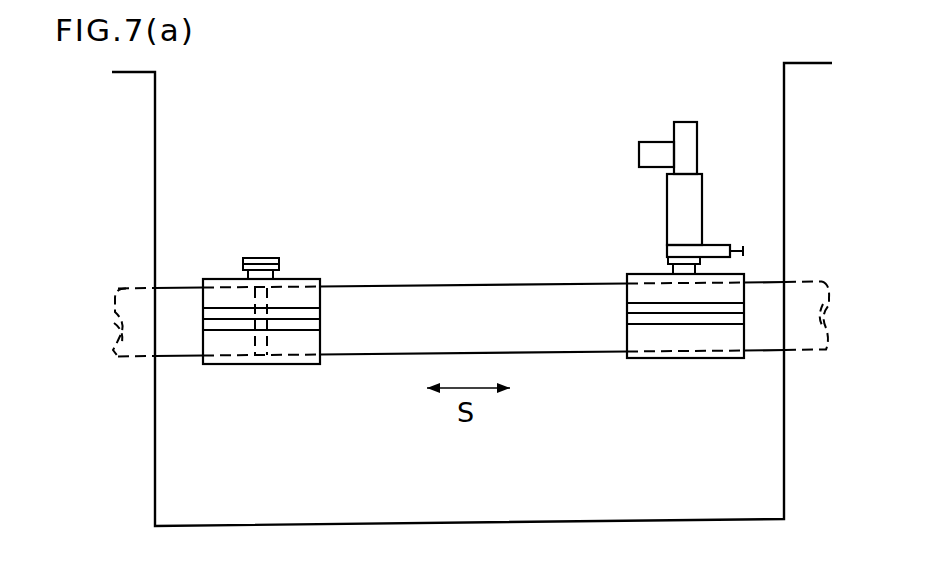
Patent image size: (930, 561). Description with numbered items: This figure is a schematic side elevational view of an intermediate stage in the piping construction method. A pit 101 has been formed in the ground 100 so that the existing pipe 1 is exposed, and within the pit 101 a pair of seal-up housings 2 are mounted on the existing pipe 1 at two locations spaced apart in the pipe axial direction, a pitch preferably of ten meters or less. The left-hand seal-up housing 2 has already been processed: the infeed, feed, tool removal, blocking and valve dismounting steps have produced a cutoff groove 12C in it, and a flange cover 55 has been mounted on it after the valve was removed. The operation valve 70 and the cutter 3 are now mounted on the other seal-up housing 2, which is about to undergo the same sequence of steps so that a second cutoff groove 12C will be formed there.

The ground 100 is at (810, 66).
The pit 101 is at (716, 102).
The existing pipe 1 is at (177, 300).
The seal-up housing 2 is at (222, 366).
The cutoff groove 12C is at (263, 366).
The flange cover 55 is at (262, 259).
The cutter 3 is at (690, 192).
The operation valve 70 is at (710, 253).